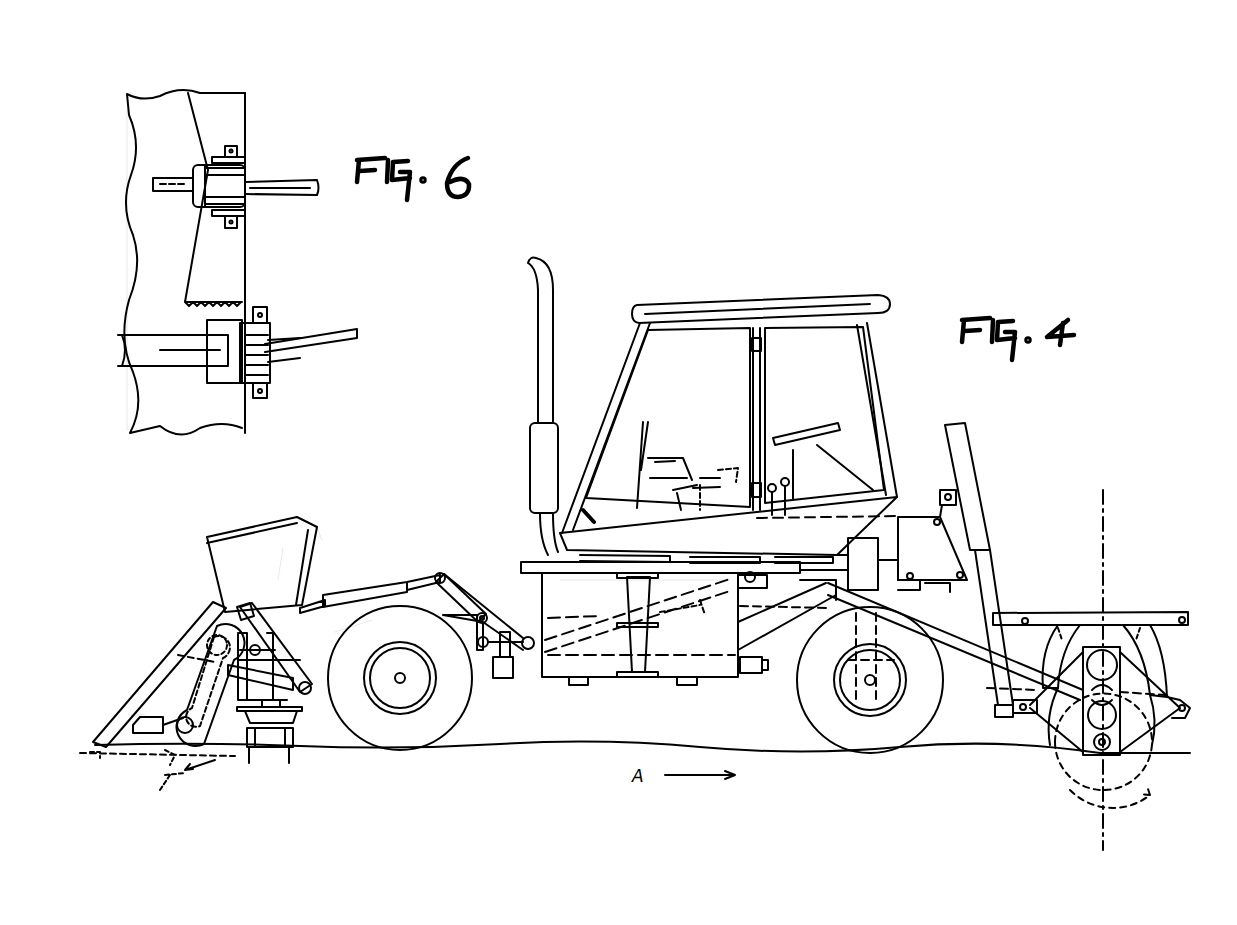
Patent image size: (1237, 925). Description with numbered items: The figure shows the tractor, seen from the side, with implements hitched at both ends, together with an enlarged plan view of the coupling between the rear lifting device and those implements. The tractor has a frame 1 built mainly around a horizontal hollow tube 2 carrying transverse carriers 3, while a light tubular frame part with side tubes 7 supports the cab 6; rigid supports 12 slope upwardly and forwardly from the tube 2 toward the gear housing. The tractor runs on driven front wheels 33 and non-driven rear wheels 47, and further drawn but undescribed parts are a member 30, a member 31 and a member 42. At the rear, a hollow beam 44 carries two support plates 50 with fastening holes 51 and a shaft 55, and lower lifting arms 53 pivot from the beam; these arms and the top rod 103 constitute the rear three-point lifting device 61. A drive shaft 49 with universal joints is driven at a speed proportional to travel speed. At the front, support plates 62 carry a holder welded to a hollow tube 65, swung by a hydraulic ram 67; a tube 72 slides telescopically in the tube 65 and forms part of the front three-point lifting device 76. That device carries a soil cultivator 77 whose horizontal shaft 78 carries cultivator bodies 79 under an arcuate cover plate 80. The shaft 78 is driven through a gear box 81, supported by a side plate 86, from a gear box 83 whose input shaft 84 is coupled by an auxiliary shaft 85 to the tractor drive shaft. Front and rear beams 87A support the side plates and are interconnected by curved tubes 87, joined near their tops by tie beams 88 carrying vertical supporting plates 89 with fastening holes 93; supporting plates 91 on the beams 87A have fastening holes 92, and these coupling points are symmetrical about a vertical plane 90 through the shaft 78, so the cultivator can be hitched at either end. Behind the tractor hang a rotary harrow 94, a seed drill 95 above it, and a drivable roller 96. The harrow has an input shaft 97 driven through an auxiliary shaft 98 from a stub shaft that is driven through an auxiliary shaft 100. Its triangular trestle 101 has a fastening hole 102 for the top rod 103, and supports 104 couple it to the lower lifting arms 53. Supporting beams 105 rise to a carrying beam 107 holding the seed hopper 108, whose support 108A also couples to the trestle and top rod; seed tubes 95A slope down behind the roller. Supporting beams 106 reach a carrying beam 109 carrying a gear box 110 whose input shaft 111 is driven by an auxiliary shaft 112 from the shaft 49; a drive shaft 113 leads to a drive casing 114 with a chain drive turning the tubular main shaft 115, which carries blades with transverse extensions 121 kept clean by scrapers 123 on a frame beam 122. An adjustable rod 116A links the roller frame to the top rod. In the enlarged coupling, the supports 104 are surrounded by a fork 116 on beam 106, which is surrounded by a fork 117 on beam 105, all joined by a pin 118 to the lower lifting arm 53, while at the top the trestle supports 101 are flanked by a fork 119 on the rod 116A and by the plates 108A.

In FIG. 4, the frame 1 is at (642, 720).
In FIG. 4, the hollow tube 2 is at (608, 678).
In FIG. 4, the carriers 3 is at (580, 688).
In FIG. 4, the cab 6 is at (712, 388).
In FIG. 4, the tubes 7 is at (566, 577).
In FIG. 4, the rigid supports 12 is at (765, 625).
In FIG. 4, the rear mounting block 30 is at (862, 552).
In FIG. 4, the rear axle 31 is at (856, 640).
In FIG. 4, the front wheels 33 is at (820, 745).
In FIG. 4, the bracket 42 is at (752, 678).
In FIG. 4, the hollow beam 44 is at (503, 678).
In FIG. 4, the rear wheels 47 is at (455, 742).
In FIG. 4, the drive shaft 49 is at (600, 628).
In FIG. 4, the support plates 50 is at (472, 584).
In FIG. 4, the fastening holes 51 is at (443, 572).
In FIG. 6, the lower lifting arms 53 is at (357, 338).
In FIG. 4, the shaft 55 is at (484, 600).
In FIG. 4, the three-point lifting device 61 is at (425, 598).
In FIG. 4, the support plates 62 is at (915, 518).
In FIG. 4, the hollow tube 65 is at (970, 432).
In FIG. 4, the hydraulic ram 67 is at (940, 583).
In FIG. 4, the tube 72 is at (995, 570).
In FIG. 4, the front three-point lifting device 76 is at (1027, 524).
In FIG. 4, the soil cultivator 77 is at (1147, 580).
In FIG. 4, the horizontal shaft 78 is at (1075, 768).
In FIG. 4, the cultivator bodies 79 is at (1098, 790).
In FIG. 4, the arcuate cover plate 80 is at (1040, 748).
In FIG. 4, the gear box 81 is at (1150, 730).
In FIG. 4, the gear box 83 is at (1137, 615).
In FIG. 4, the input shaft 84 is at (1082, 625).
In FIG. 4, the auxiliary shaft 85 is at (965, 645).
In FIG. 4, the side plate 86 is at (1065, 755).
In FIG. 4, the curved tubes 87 is at (1170, 660).
In FIG. 4, the beams 87A is at (1165, 695).
In FIG. 4, the tie beams 88 is at (1058, 625).
In FIG. 4, the supporting plates 89 is at (1182, 618).
In FIG. 4, the vertical plane 90 is at (1103, 522).
In FIG. 4, the supporting plates 91 is at (1185, 700).
In FIG. 4, the fastening holes 92 is at (1192, 710).
In FIG. 4, the fastening holes 93 is at (1025, 618).
In FIG. 6, the rotary harrow 94 is at (122, 136).
In FIG. 4, the rotary harrow 94 is at (298, 756).
In FIG. 4, the seed drill 95 is at (319, 519).
In FIG. 4, the seed tubes 95A is at (150, 680).
In FIG. 4, the drivable roller 96 is at (163, 770).
In FIG. 4, the input shaft 97 is at (372, 668).
In FIG. 4, the auxiliary shaft 98 is at (370, 680).
In FIG. 4, the auxiliary shaft 100 is at (665, 620).
In FIG. 6, the trestle 101 is at (245, 107).
In FIG. 4, the trestle 101 is at (318, 592).
In FIG. 4, the fastening hole 102 is at (318, 572).
In FIG. 6, the top rod 103 is at (317, 190).
In FIG. 4, the top rod 103 is at (385, 575).
In FIG. 6, the supports 104 is at (270, 340).
In FIG. 4, the supports 104 is at (290, 720).
In FIG. 6, the supporting beams 105 is at (160, 362).
In FIG. 4, the supporting beams 105 is at (350, 700).
In FIG. 6, the supporting beams 106 is at (125, 340).
In FIG. 4, the supporting beams 106 is at (248, 757).
In FIG. 4, the carrying beam 107 is at (243, 603).
In FIG. 4, the seed hopper 108 is at (207, 557).
In FIG. 6, the support 108A is at (245, 160).
In FIG. 4, the support 108A is at (310, 560).
In FIG. 4, the carrying beam 109 is at (178, 655).
In FIG. 4, the gear box 110 is at (190, 622).
In FIG. 4, the input shaft 111 is at (269, 666).
In FIG. 4, the auxiliary shaft 112 is at (350, 632).
In FIG. 4, the drive shaft 113 is at (230, 606).
In FIG. 4, the drive casing 114 is at (205, 660).
In FIG. 4, the main shaft 115 is at (203, 662).
In FIG. 6, the fork 116 is at (268, 323).
In FIG. 6, the rod 116A is at (153, 185).
In FIG. 4, the rod 116A is at (278, 580).
In FIG. 6, the fork 117 is at (200, 420).
In FIG. 6, the pin 118 is at (262, 398).
In FIG. 6, the fork 119 is at (193, 200).
In FIG. 4, the transverse extensions 121 is at (187, 785).
In FIG. 4, the frame beam 122 is at (133, 720).
In FIG. 4, the scrapers 123 is at (114, 752).